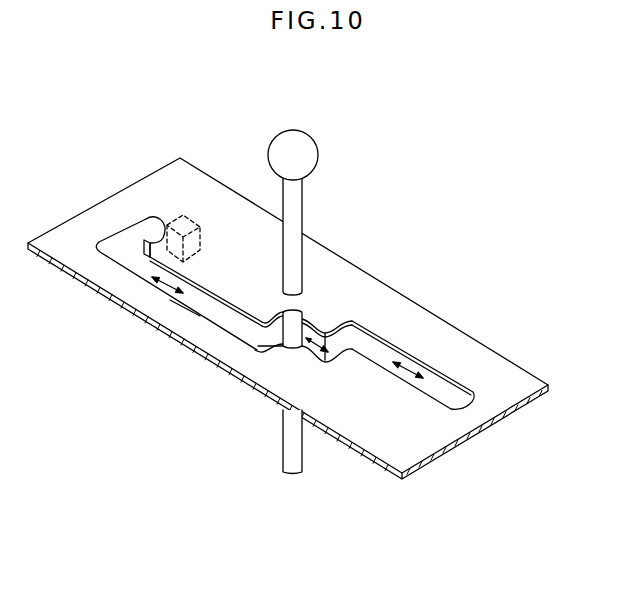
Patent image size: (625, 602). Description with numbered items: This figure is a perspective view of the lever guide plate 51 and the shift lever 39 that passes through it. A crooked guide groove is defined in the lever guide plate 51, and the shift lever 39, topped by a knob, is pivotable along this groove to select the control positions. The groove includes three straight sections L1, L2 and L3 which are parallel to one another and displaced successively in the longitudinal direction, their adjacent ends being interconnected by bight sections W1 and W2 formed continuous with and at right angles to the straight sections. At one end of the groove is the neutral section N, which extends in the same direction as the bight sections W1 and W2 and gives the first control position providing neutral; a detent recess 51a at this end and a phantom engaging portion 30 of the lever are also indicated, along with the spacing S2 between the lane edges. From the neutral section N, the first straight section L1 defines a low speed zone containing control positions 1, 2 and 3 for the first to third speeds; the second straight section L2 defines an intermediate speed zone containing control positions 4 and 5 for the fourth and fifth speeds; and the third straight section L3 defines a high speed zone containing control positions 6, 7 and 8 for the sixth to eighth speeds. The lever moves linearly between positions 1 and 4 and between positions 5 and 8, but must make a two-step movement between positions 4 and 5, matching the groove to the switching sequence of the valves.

The lever guide plate 51 is at (432, 446).
The detent recess 51a is at (143, 227).
The shift lever engaging portion (phantom) 30 is at (200, 238).
The shift lever 39 is at (314, 162).
The first straight section L1 is at (168, 283).
The second straight section L2 is at (313, 347).
The third straight section L3 is at (410, 372).
The lane spacing S2 is at (197, 304).
The bight section W1 is at (262, 342).
The bight section W2 is at (345, 340).
The neutral section N is at (176, 209).
The second control position 1 is at (191, 255).
The third control position 2 is at (209, 288).
The fourth control position 3 is at (244, 309).
The fifth control position 4 is at (305, 315).
The sixth control position 5 is at (365, 322).
The seventh control position 6 is at (402, 343).
The eighth control position 7 is at (432, 364).
The ninth control position 8 is at (472, 384).